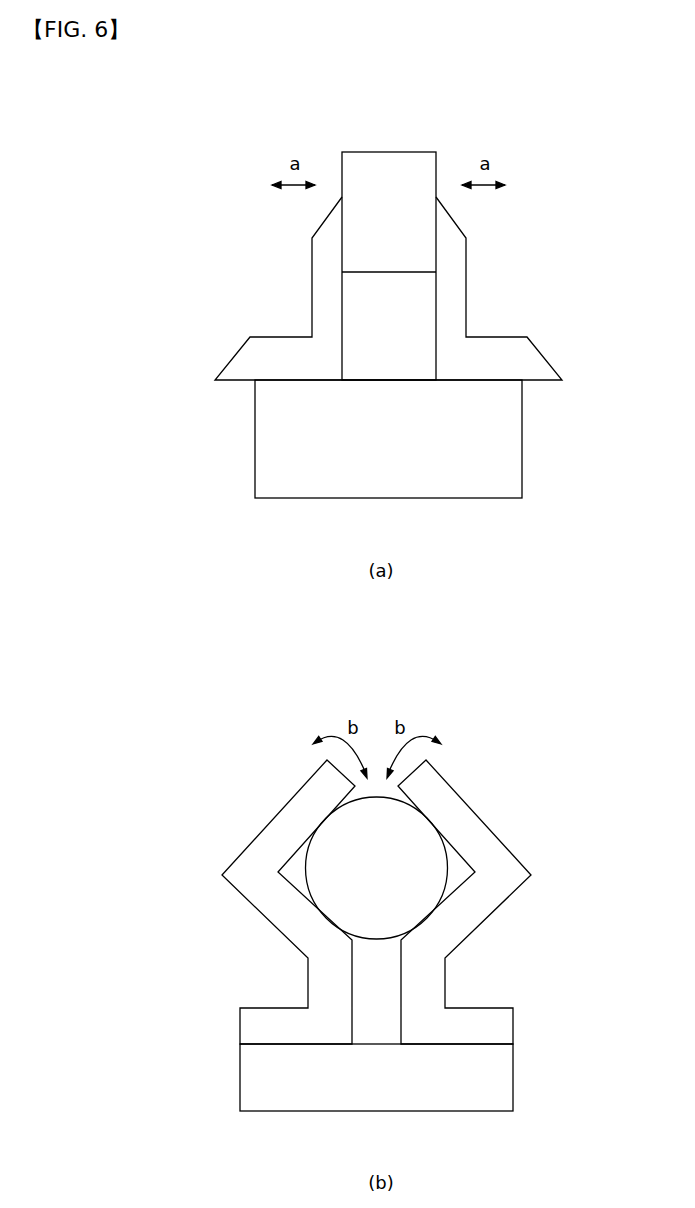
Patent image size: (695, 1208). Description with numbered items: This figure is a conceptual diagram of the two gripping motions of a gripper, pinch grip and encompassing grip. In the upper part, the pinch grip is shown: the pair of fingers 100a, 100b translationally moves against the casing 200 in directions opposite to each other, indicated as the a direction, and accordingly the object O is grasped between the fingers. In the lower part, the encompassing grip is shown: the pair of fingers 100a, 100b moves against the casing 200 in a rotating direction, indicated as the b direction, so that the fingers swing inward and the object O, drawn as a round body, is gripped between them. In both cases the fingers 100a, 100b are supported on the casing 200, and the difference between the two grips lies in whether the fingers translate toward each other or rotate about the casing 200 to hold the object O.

The finger 100a is at (327, 295).
The finger 100b is at (450, 295).
The casing 200 is at (378, 468).
The object O is at (390, 150).